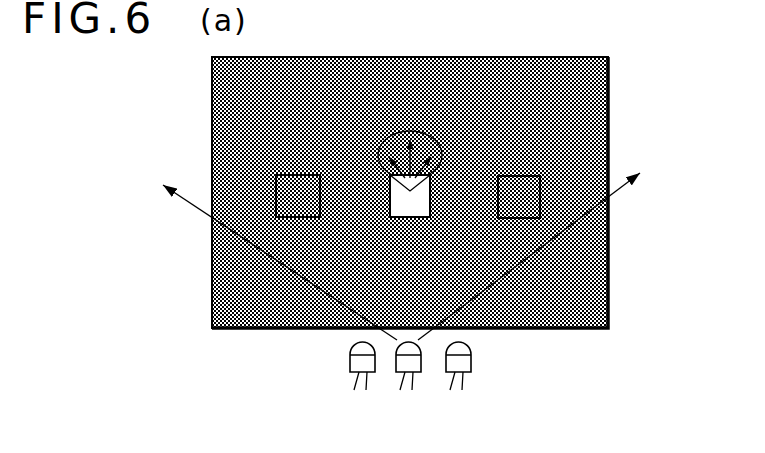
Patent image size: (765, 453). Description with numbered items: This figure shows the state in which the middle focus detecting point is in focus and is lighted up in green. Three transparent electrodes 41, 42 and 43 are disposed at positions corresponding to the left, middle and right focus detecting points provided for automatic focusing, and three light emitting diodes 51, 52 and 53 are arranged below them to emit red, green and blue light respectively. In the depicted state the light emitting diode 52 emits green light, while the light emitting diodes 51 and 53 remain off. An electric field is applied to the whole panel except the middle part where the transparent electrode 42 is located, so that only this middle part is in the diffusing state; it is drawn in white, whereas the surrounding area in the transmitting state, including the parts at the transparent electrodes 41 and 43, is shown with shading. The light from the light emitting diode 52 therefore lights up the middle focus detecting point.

The transparent electrode 41 is at (276, 198).
The transparent electrode 42 is at (432, 203).
The transparent electrode 43 is at (540, 197).
The light emitting diode 51 is at (350, 356).
The light emitting diode 52 is at (421, 363).
The light emitting diode 53 is at (472, 362).